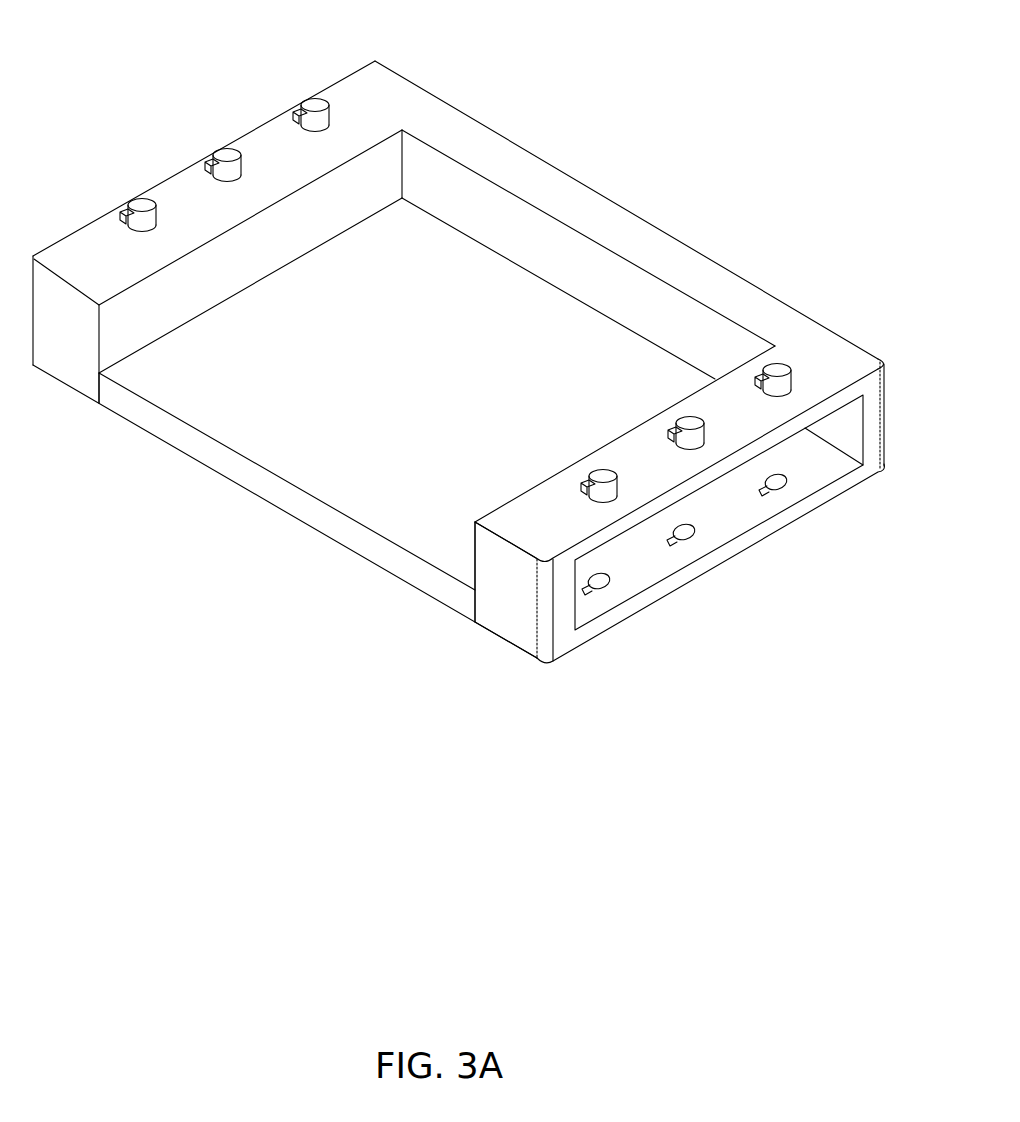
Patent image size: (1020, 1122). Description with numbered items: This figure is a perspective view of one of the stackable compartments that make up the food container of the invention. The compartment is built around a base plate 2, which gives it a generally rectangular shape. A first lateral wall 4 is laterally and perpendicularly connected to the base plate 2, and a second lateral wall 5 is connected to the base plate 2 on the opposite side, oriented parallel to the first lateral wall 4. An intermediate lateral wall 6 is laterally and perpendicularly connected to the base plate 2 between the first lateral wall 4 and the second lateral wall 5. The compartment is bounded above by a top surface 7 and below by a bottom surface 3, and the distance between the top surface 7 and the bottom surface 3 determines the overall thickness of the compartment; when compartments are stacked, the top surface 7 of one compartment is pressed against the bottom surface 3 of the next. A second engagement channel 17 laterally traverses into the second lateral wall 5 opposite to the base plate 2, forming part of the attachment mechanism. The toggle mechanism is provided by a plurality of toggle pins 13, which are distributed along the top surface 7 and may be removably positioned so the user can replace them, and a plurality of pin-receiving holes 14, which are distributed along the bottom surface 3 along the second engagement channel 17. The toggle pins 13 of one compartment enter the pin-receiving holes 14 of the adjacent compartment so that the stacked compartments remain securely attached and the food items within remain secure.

The base plate 2 is at (419, 373).
The bottom surface 3 is at (385, 584).
The first lateral wall 4 is at (142, 325).
The second lateral wall 5 is at (492, 581).
The intermediate lateral wall 6 is at (622, 303).
The top surface 7 is at (553, 505).
The toggle pins 13 is at (314, 104).
The pin-receiving holes 14 is at (699, 532).
The second engagement channel 17 is at (847, 436).